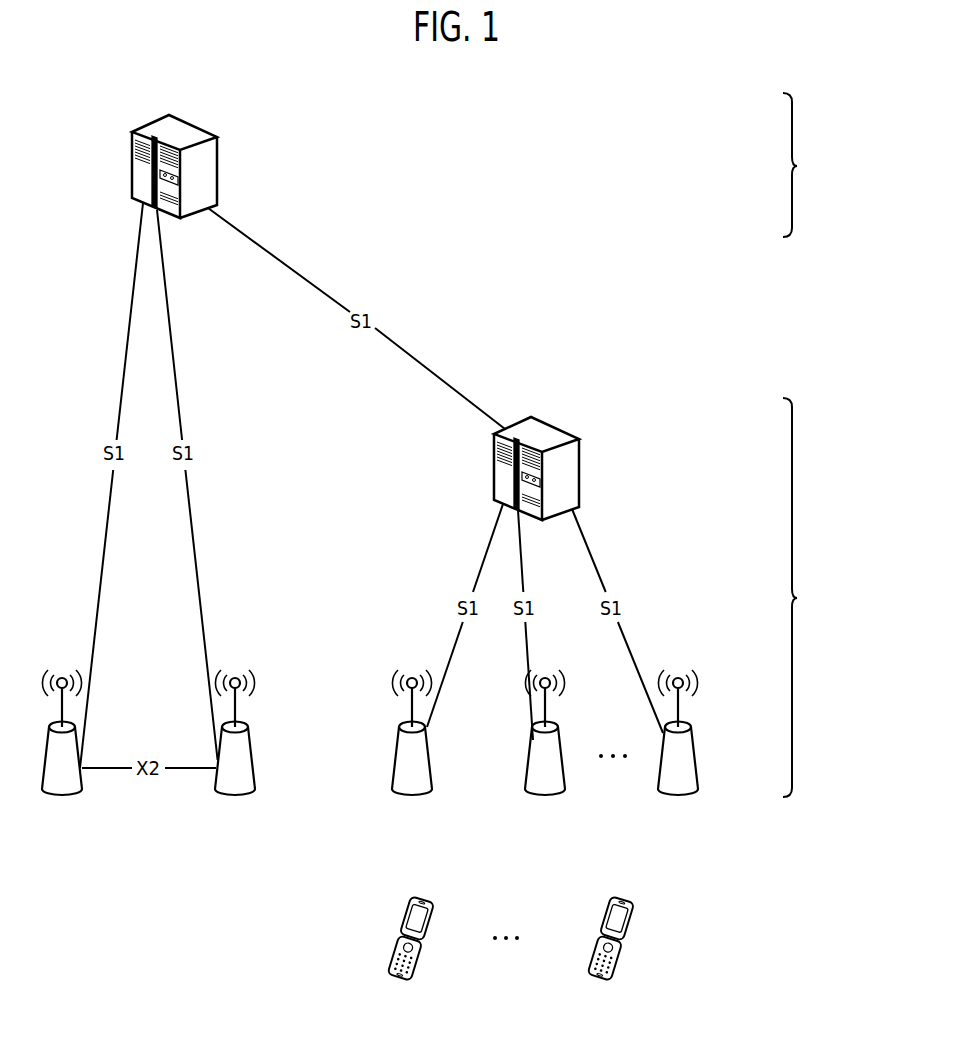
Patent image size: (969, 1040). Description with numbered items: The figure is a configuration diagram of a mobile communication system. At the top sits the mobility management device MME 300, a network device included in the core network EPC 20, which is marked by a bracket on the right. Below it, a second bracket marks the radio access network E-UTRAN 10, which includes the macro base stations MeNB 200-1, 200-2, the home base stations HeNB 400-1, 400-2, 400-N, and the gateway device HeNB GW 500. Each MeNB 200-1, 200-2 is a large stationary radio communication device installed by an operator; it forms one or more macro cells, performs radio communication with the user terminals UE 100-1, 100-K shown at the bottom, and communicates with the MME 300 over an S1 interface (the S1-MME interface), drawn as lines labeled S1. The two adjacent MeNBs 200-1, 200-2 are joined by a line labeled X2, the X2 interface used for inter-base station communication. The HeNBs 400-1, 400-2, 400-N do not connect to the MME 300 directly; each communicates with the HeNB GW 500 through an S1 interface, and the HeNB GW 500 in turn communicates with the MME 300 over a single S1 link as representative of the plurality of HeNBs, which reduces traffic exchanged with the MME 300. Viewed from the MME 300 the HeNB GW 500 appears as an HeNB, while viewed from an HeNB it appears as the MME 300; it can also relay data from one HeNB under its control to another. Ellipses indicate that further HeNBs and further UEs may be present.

The radio access network (E-UTRAN) 10 is at (836, 597).
The core network (EPC) 20 is at (812, 165).
The user terminal (UE) 100-1 is at (427, 908).
The user terminal (UE) 100-K is at (627, 908).
The macro base station (MeNB) 200-1 is at (83, 782).
The macro base station (MeNB) 200-2 is at (248, 735).
The mobility management device (MME) 300 is at (218, 160).
The home base station (HeNB) 400-1 is at (430, 777).
The home base station (HeNB) 400-2 is at (558, 735).
The home base station (HeNB) 400-N is at (691, 735).
The gateway device (HeNB GW) 500 is at (580, 462).